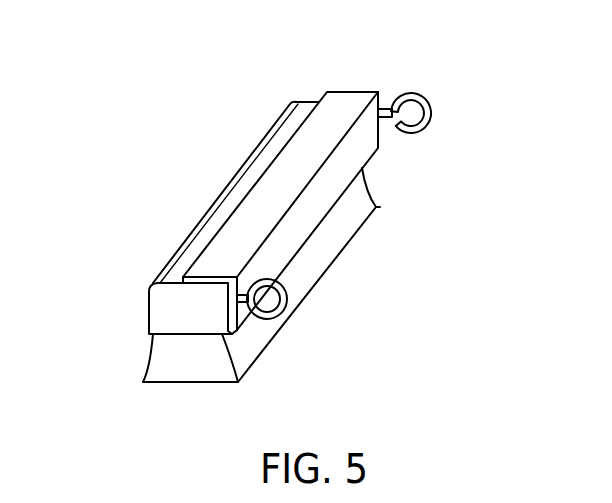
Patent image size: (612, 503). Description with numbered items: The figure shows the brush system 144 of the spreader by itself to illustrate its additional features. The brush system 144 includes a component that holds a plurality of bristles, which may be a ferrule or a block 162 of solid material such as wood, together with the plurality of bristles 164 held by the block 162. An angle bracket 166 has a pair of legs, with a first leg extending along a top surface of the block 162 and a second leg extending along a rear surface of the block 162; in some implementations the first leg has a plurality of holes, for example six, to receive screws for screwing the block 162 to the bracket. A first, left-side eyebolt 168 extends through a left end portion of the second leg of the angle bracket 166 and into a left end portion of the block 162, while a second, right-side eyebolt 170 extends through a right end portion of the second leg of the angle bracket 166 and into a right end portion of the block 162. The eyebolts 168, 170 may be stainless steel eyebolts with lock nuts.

The brush system 144 is at (210, 147).
The block 162 is at (175, 305).
The bristles 164 is at (173, 362).
The angle bracket 166 is at (338, 115).
The first eyebolt 168 is at (285, 310).
The second eyebolt 170 is at (430, 124).